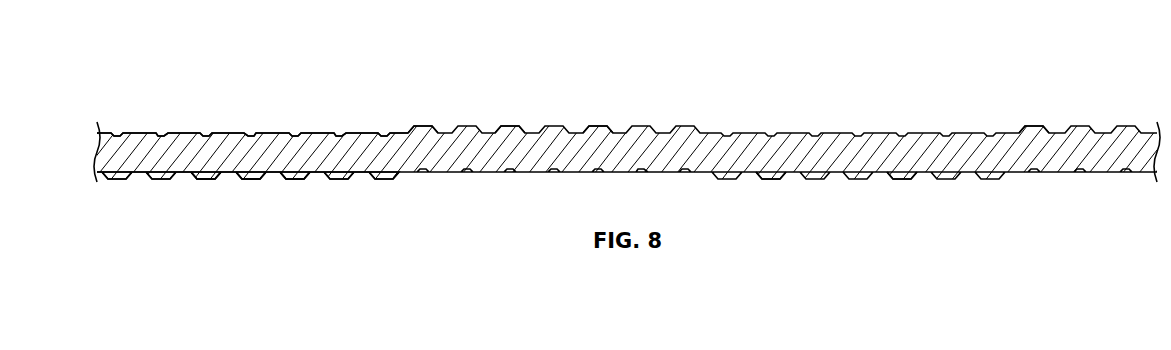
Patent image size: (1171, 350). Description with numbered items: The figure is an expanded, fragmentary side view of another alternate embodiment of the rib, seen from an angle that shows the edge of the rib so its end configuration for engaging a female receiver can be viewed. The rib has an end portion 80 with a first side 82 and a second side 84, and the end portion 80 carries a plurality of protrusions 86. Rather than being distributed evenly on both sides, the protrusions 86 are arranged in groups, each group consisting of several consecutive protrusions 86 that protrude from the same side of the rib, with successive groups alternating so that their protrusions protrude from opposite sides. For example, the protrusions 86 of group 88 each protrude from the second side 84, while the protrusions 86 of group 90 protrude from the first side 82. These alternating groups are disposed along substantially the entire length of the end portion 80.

The end portion 80 is at (179, 121).
The first side 82 is at (140, 133).
The second side 84 is at (140, 180).
The protrusions 86 is at (427, 126).
The group 88 is at (112, 242).
The group 90 is at (420, 60).